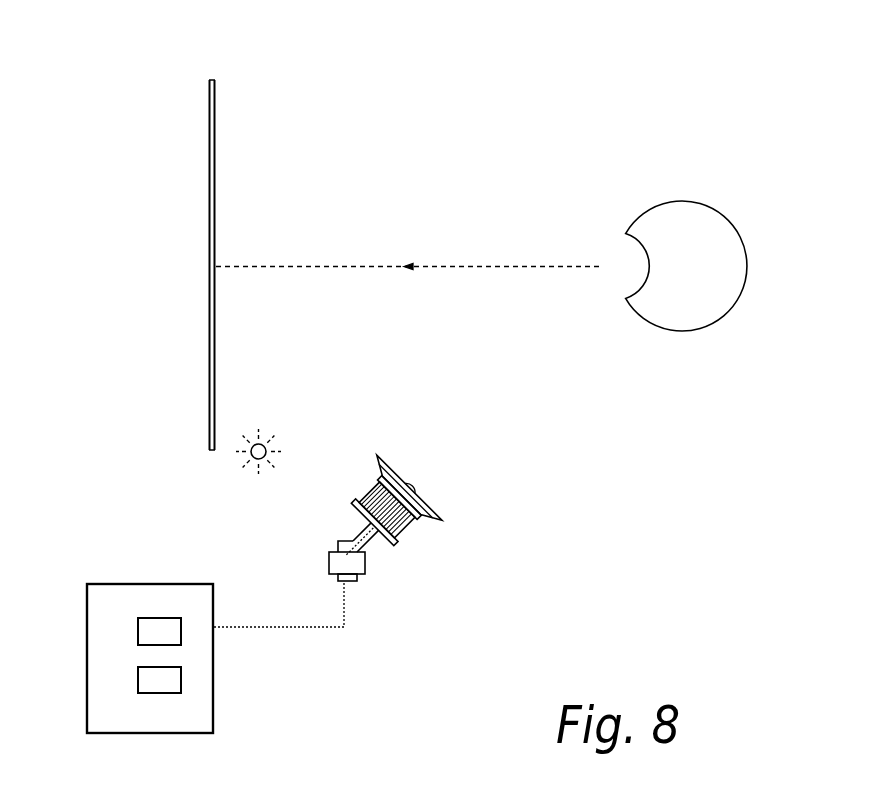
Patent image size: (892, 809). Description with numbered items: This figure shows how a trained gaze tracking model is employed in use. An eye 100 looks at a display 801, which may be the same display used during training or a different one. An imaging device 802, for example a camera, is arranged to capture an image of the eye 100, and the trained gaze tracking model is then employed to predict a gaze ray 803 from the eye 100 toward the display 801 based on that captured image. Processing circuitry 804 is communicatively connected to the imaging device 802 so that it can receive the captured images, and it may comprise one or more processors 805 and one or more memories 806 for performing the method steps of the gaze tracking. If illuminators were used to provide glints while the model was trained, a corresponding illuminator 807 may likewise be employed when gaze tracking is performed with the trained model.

The eye 100 is at (747, 256).
The display 801 is at (212, 80).
The imaging device 802 is at (411, 479).
The gaze ray 803 is at (517, 265).
The processing circuitry 804 is at (102, 582).
The processor 805 is at (160, 617).
The memory 806 is at (182, 680).
The illuminator 807 is at (257, 460).